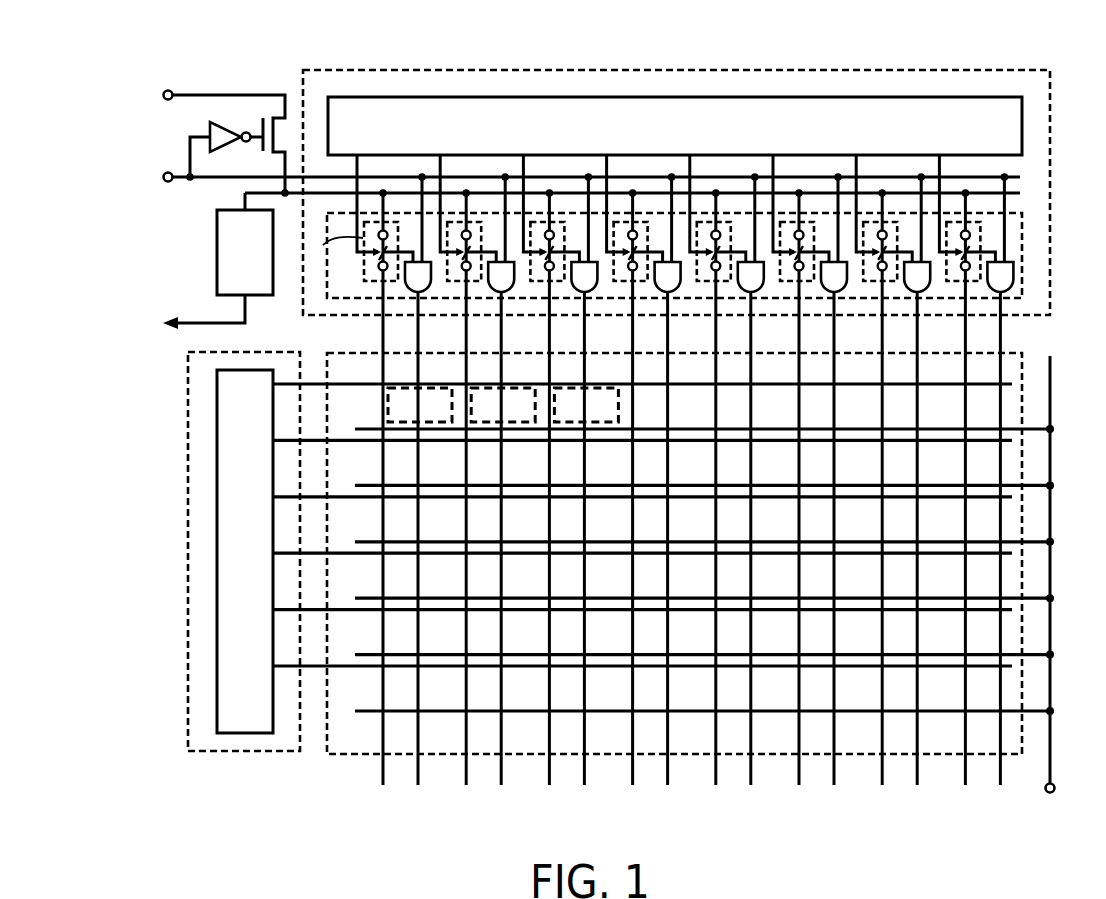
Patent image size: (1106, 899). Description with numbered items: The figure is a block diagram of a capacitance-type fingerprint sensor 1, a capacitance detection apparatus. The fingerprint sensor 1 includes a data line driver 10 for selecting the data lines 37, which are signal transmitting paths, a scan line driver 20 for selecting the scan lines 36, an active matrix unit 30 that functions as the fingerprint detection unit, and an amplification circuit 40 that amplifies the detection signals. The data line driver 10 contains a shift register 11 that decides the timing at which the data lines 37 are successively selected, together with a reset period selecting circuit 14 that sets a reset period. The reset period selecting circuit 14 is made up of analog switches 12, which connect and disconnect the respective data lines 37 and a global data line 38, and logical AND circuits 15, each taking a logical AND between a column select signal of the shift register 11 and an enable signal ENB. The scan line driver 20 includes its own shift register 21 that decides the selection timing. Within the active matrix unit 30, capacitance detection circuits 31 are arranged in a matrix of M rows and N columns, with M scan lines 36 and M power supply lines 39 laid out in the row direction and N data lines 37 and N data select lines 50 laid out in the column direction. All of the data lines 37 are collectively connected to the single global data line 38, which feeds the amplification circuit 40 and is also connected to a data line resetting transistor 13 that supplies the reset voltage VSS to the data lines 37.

The capacitance-type fingerprint sensor 1 is at (1021, 50).
The data line driver 10 is at (740, 70).
The shift register 11 is at (675, 126).
The analog switch 12 is at (981, 238).
The data line resetting transistor 13 is at (278, 114).
The reset period selecting circuit 14 is at (1022, 214).
The logical AND circuit 15 is at (1013, 290).
The scan line driver 20 is at (200, 752).
The shift register 21 is at (245, 551).
The active matrix unit 30 is at (697, 755).
The capacitance detection circuit 31 is at (429, 423).
The scan line 36 is at (323, 381).
The data line 37 is at (382, 773).
The global data line 38 is at (241, 198).
The power supply line 39 is at (366, 428).
The amplification circuit 40 is at (218, 261).
The data select line 50 is at (418, 772).